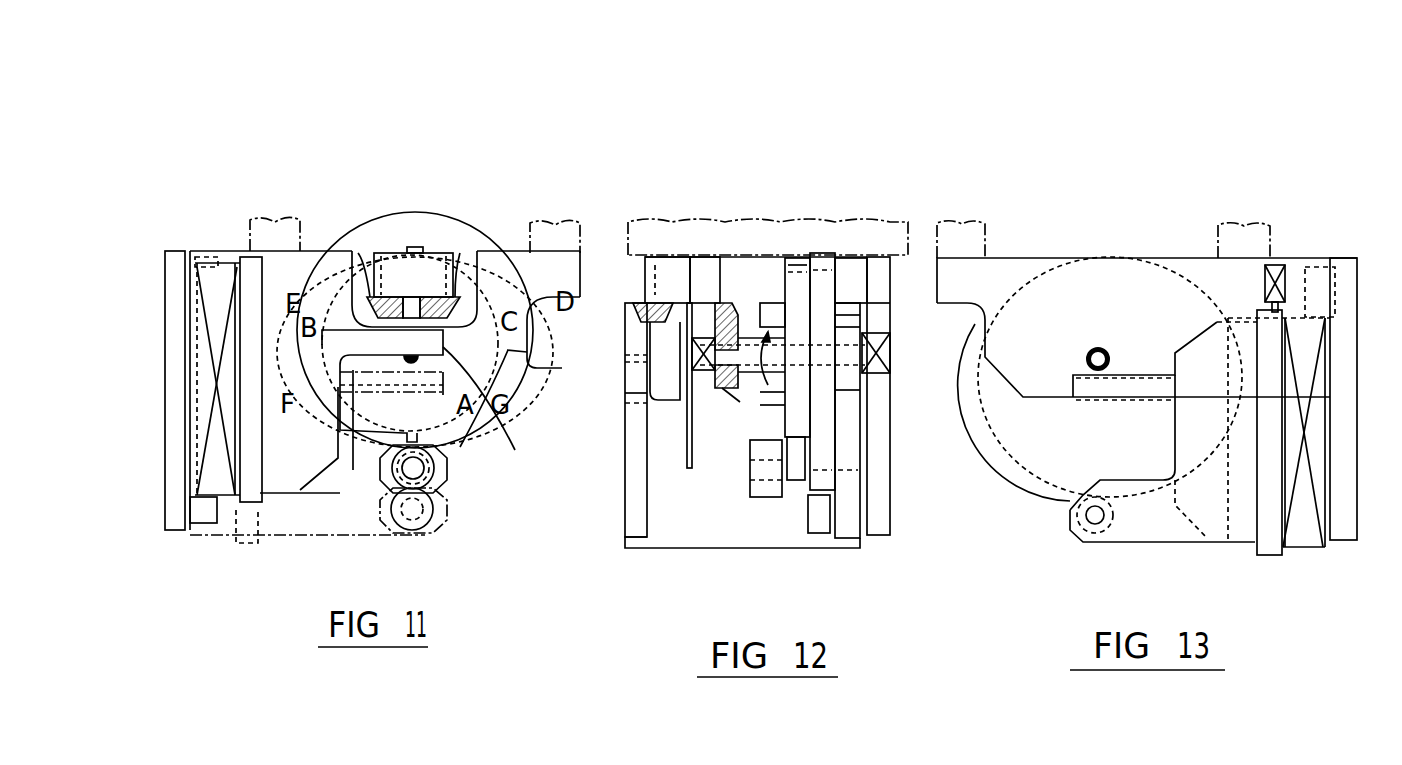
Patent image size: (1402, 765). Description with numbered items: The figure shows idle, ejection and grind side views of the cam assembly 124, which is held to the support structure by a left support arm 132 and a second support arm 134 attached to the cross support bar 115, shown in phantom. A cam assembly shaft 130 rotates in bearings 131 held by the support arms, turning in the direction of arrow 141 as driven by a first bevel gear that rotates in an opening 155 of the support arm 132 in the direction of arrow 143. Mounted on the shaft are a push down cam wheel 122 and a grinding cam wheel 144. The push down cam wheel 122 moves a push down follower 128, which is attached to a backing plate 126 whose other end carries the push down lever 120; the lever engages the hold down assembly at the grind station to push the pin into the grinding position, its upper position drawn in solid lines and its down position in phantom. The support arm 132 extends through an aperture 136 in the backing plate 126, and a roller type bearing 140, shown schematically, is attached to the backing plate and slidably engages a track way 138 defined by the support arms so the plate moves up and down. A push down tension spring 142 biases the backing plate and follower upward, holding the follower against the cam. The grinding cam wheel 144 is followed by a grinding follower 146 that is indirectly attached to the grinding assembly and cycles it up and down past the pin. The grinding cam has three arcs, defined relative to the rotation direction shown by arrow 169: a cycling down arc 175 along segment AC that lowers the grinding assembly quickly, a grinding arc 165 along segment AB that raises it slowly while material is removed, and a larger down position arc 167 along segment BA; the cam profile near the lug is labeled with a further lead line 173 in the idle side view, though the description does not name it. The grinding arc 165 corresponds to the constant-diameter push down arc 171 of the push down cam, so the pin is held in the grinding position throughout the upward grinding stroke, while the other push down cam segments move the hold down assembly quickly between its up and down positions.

In FIG. 12, the cross support bar 115 is at (880, 232).
In FIG. 11, the push down lever 120 is at (480, 420).
In FIG. 12, the push down lever 120 is at (627, 390).
In FIG. 13, the push down lever 120 is at (1000, 430).
In FIG. 11, the push down cam wheel 122 is at (543, 343).
In FIG. 12, the push down cam wheel 122 is at (815, 263).
In FIG. 13, the push down cam wheel 122 is at (978, 393).
In FIG. 11, the cam assembly 124 is at (290, 150).
In FIG. 11, the backing plate 126 is at (248, 515).
In FIG. 12, the backing plate 126 is at (706, 542).
In FIG. 13, the backing plate 126 is at (1265, 557).
In FIG. 11, the push down follower 128 is at (436, 470).
In FIG. 12, the push down follower 128 is at (830, 536).
In FIG. 13, the push down follower 128 is at (1083, 525).
In FIG. 12, the cam assembly shaft 130 is at (707, 403).
In FIG. 12, the bearings 131 is at (697, 336).
In FIG. 11, the left support arm 132 is at (570, 268).
In FIG. 12, the left support arm 132 is at (700, 277).
In FIG. 12, the support arm 134 is at (918, 258).
In FIG. 13, the support arm 134 is at (1005, 270).
In FIG. 12, the aperture 136 is at (667, 397).
In FIG. 11, the track way 138 is at (202, 260).
In FIG. 13, the track way 138 is at (1332, 274).
In FIG. 11, the roller type bearing 140 is at (200, 448).
In FIG. 13, the roller type bearing 140 is at (1315, 373).
In FIG. 12, the arrow 141 is at (767, 372).
In FIG. 13, the push down tension spring 142 is at (1280, 252).
In FIG. 12, the arrow 143 is at (718, 280).
In FIG. 12, the grinding cam wheel 144 is at (793, 257).
In FIG. 11, the grinding follower 146 is at (387, 462).
In FIG. 12, the grinding follower 146 is at (797, 486).
In FIG. 11, the opening 155 is at (463, 295).
In FIG. 11, the grinding arc 165 is at (380, 300).
In FIG. 11, the down position arc 167 is at (350, 450).
In FIG. 11, the arrow 169 is at (385, 122).
In FIG. 11, the push down arc 171 is at (430, 250).
In FIG. 11, the cam surface 173 is at (455, 400).
In FIG. 11, the cycling down arc 175 is at (530, 364).